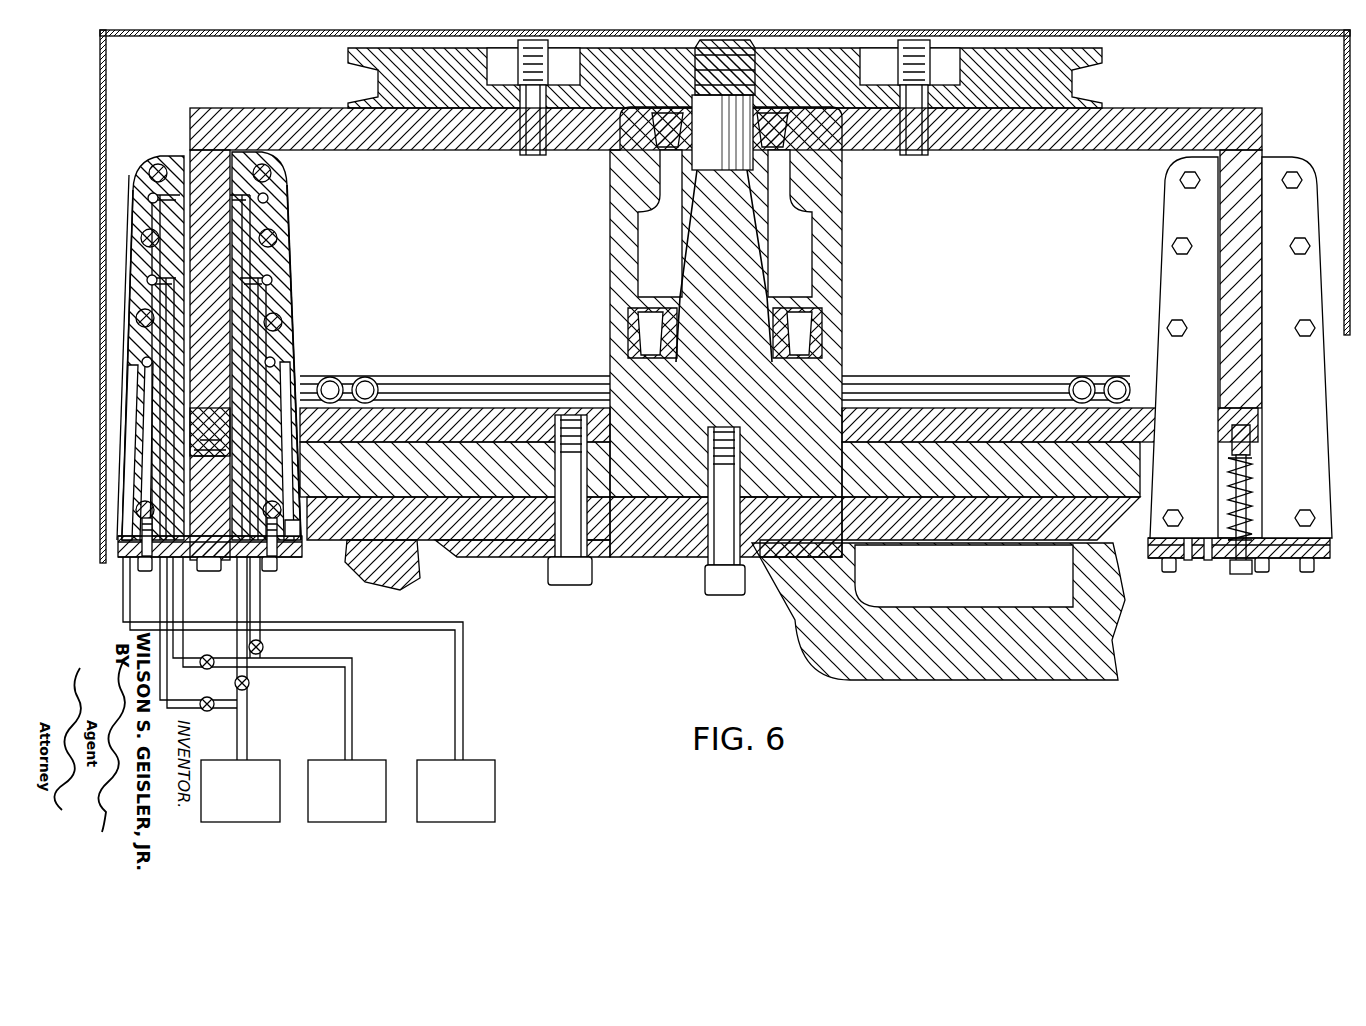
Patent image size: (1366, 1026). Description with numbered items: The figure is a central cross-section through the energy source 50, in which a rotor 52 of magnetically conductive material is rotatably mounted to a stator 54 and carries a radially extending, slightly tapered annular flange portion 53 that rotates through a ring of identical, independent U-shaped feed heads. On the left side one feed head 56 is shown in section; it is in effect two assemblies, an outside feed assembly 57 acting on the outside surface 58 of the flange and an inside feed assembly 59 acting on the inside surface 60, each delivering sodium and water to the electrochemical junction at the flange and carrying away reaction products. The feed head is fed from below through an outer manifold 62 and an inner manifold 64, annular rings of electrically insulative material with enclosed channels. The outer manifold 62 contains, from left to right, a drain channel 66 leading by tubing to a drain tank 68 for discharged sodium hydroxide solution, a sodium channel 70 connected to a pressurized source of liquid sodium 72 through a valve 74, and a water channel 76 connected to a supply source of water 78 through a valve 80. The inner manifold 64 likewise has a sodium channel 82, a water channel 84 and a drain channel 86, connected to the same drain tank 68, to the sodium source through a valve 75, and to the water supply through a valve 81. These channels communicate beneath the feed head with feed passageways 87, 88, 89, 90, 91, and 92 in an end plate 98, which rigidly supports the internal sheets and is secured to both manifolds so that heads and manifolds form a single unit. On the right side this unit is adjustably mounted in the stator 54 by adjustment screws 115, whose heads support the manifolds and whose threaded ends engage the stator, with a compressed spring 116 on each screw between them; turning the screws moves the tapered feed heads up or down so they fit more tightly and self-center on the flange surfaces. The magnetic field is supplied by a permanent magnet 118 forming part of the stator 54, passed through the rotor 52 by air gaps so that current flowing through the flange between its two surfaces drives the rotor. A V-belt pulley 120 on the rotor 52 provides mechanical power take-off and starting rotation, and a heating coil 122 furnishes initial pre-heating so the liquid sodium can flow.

The energy source 50 is at (659, 601).
The rotor 52 is at (240, 110).
The annular flange portion 53 is at (224, 228).
The stator 54 is at (411, 432).
The feed head 56 is at (120, 488).
The outside feed assembly 57 is at (114, 222).
The outside surface 58 is at (172, 168).
The inside feed assembly 59 is at (311, 221).
The inside surface 60 is at (263, 182).
The outer manifold 62 is at (120, 537).
The inner manifold 64 is at (318, 548).
The drain channel 66 is at (118, 554).
The drain tank 68 is at (458, 822).
The sodium channel 70 is at (142, 574).
The source of liquid sodium 72 is at (237, 822).
The valve 74 is at (210, 711).
The valve 75 is at (250, 680).
The water channel 76 is at (189, 572).
The supply source of water 78 is at (348, 822).
The valve 80 is at (204, 669).
The valve 81 is at (262, 646).
The sodium channel 82 is at (218, 558).
The water channel 84 is at (277, 574).
The drain channel 86 is at (277, 562).
The feed passageway 87 is at (128, 382).
The feed passageway 88 is at (147, 298).
The feed passageway 89 is at (155, 258).
The feed passageway 90 is at (261, 263).
The feed passageway 91 is at (261, 300).
The feed passageway 92 is at (277, 362).
The end plate 98 is at (299, 324).
The adjustment screw 115 is at (205, 410).
The spring 116 is at (1256, 474).
The permanent magnet 118 is at (448, 480).
The V-belt pulley 120 is at (360, 64).
The heating coil 122 is at (464, 372).